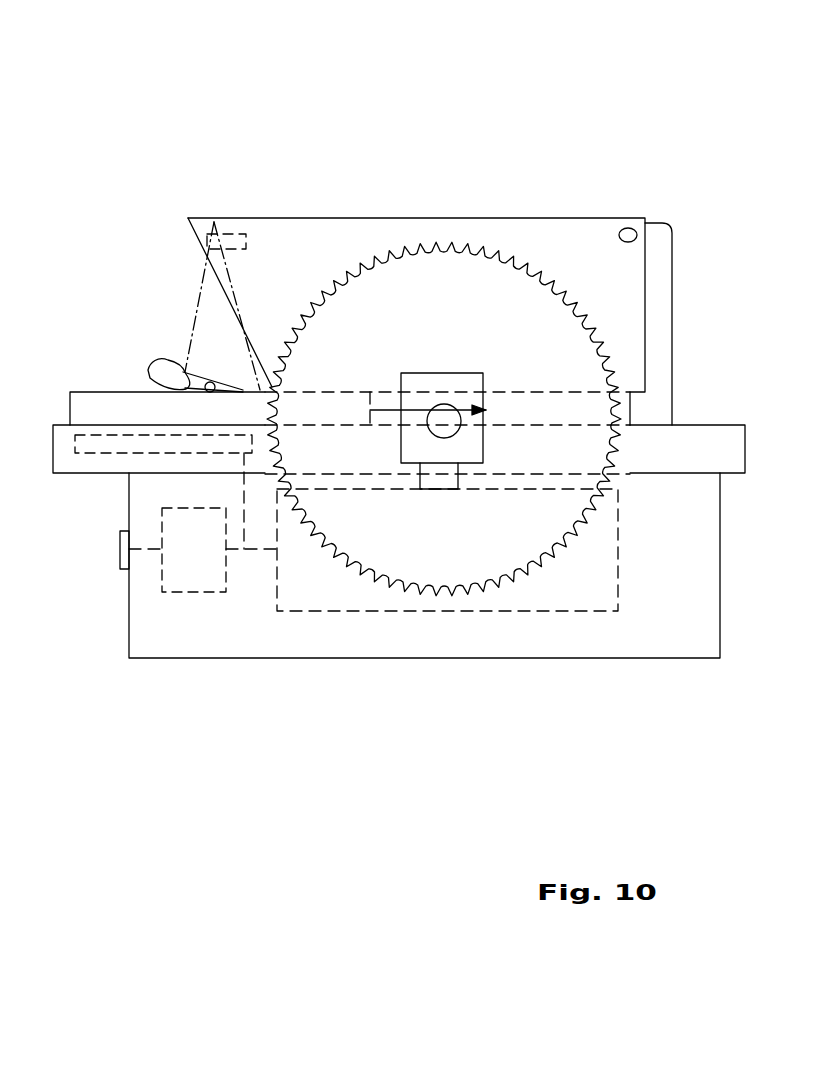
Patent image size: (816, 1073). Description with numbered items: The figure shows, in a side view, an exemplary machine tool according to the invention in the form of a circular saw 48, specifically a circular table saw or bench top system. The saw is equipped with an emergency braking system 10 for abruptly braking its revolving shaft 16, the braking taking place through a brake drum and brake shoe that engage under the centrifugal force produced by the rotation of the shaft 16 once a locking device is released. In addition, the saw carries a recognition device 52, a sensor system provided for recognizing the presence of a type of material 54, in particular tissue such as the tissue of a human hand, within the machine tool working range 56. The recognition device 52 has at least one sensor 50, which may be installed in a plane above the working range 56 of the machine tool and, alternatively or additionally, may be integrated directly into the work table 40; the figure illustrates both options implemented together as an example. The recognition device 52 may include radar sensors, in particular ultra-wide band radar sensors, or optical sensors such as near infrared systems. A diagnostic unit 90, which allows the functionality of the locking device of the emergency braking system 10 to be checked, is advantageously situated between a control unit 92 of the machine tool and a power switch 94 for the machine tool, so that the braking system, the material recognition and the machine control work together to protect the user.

The emergency braking system 10 is at (470, 457).
The revolving shaft 16 is at (444, 432).
The work table 40 is at (710, 440).
The circular saw 48 is at (667, 172).
The sensor 50 is at (225, 249).
The recognition device 52 is at (250, 226).
The type of material 54 is at (162, 363).
The machine tool working range 56 is at (218, 398).
The diagnostic unit 90 is at (197, 583).
The control unit 92 is at (590, 600).
The power switch 94 is at (116, 572).